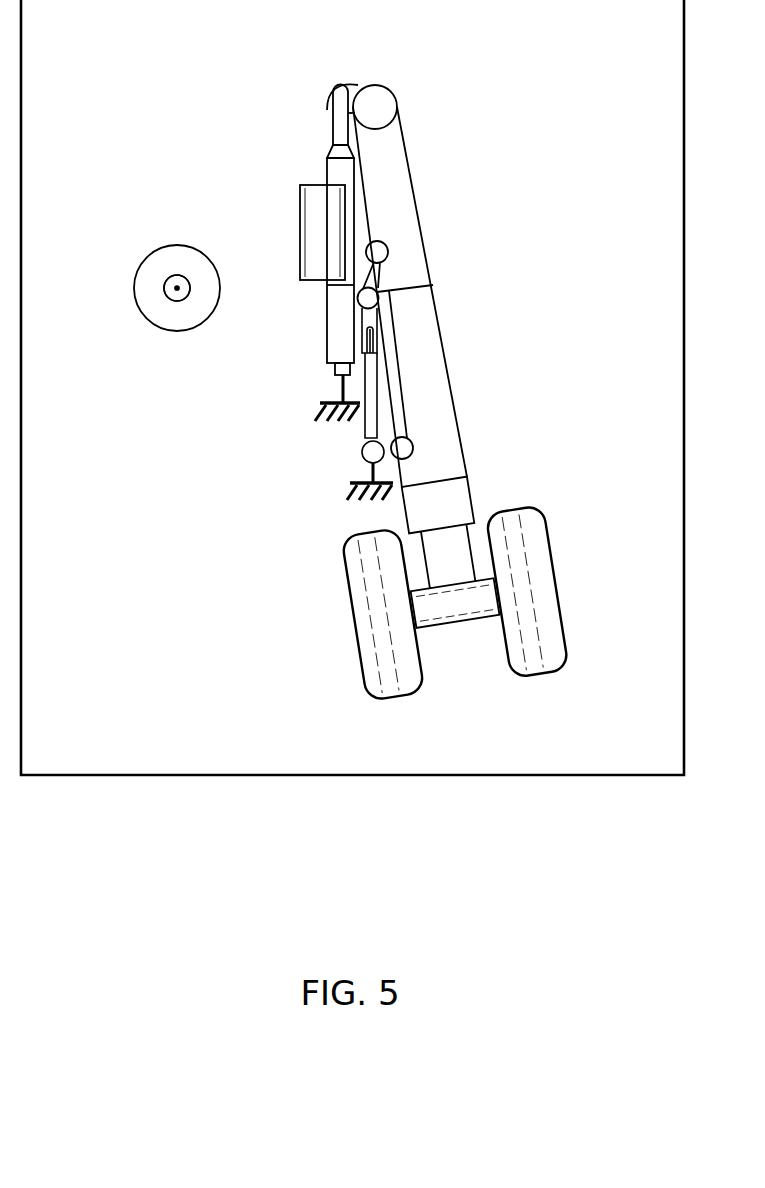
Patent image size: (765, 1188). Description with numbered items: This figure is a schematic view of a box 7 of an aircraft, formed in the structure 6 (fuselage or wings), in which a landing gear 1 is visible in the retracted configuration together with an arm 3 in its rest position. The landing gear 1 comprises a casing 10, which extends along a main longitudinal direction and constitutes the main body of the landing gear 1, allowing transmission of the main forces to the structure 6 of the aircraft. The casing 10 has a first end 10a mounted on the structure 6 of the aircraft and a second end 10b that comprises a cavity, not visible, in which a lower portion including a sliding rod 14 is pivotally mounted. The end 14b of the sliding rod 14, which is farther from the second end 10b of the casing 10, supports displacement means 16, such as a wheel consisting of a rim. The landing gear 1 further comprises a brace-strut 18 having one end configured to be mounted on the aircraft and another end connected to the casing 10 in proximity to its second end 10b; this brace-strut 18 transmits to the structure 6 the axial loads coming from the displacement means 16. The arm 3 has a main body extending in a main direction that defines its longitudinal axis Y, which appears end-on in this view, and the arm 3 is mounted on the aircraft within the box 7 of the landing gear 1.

The landing gear 1 is at (527, 231).
The arm 3 is at (190, 333).
The longitudinal axis of the arm Y is at (175, 272).
The structure 6 is at (328, 425).
The box 7 is at (684, 220).
The casing 10 is at (397, 187).
The first end of the casing 10a is at (375, 97).
The second end of the casing 10b is at (467, 477).
The sliding rod 14 is at (455, 550).
The end of the sliding rod 14b is at (465, 608).
The displacement means 16 is at (548, 607).
The brace-strut 18 is at (378, 347).